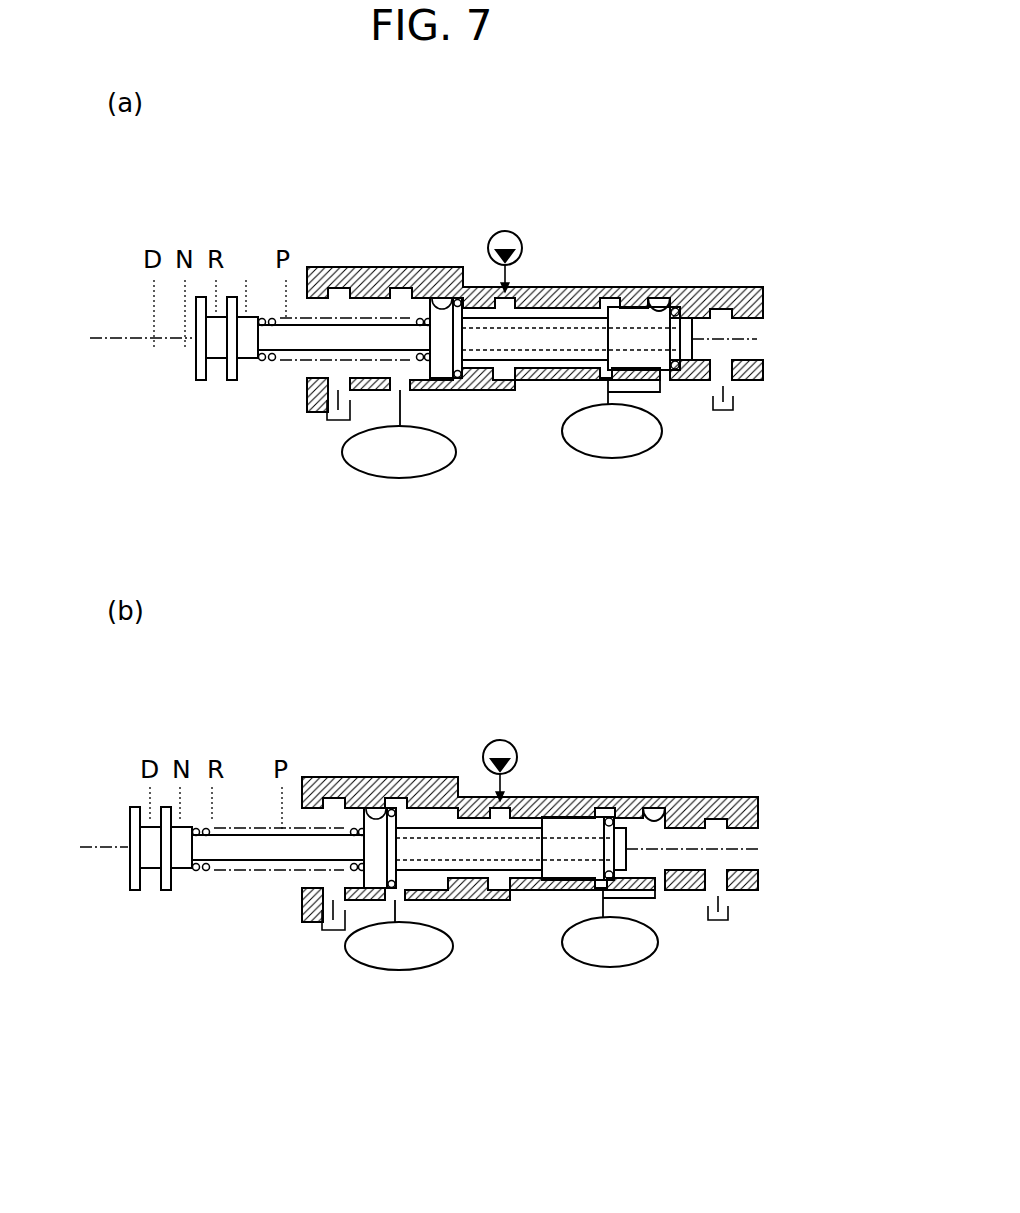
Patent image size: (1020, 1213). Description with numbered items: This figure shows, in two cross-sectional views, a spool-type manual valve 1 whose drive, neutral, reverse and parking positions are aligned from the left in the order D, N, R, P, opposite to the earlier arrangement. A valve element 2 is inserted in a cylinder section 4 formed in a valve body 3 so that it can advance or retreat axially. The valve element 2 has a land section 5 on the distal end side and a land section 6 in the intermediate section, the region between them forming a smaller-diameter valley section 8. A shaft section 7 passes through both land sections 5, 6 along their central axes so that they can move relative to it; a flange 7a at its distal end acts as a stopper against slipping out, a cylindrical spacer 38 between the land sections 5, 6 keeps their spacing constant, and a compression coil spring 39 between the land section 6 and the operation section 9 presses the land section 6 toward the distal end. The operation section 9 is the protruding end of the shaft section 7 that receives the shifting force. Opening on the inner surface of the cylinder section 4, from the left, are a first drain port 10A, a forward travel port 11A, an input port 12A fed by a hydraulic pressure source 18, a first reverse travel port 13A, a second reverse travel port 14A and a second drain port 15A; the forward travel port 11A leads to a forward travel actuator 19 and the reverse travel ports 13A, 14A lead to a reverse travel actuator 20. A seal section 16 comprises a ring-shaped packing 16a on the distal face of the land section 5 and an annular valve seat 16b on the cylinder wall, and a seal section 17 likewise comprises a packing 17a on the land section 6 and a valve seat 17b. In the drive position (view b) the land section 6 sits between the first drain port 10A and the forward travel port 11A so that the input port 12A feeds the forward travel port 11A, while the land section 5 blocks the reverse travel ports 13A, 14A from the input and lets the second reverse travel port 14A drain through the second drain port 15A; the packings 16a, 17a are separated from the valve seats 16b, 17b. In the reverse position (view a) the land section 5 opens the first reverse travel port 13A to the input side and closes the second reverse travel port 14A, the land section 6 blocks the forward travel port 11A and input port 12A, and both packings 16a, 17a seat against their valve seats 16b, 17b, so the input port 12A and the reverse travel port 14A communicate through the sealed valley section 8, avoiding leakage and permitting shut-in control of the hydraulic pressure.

The manual valve 1 is at (320, 215).
The valve element 2 is at (178, 633).
The valve body 3 is at (532, 604).
The cylinder section 4 is at (605, 552).
The land section 5 is at (636, 307).
The land section 6 is at (391, 524).
The shaft section 7 is at (288, 342).
The flange 7a is at (693, 337).
The valley section 8 is at (533, 342).
The operation section 9 is at (215, 343).
The first drain port 10A is at (330, 392).
The forward travel port 11A is at (398, 388).
The input port 12A is at (497, 388).
The first reverse travel port 13A is at (607, 380).
The second reverse travel port 14A is at (663, 385).
The second drain port 15A is at (735, 393).
The seal section 16 is at (647, 520).
The packing 16a is at (655, 308).
The valve seat 16b is at (679, 308).
The seal section 17 is at (455, 378).
The packing 17a is at (433, 300).
The valve seat 17b is at (445, 549).
The hydraulic pressure source 18 is at (520, 237).
The forward travel actuator 19 is at (400, 478).
The reverse travel actuator 20 is at (605, 458).
The spacer 38 is at (517, 368).
The compression coil spring 39 is at (263, 360).